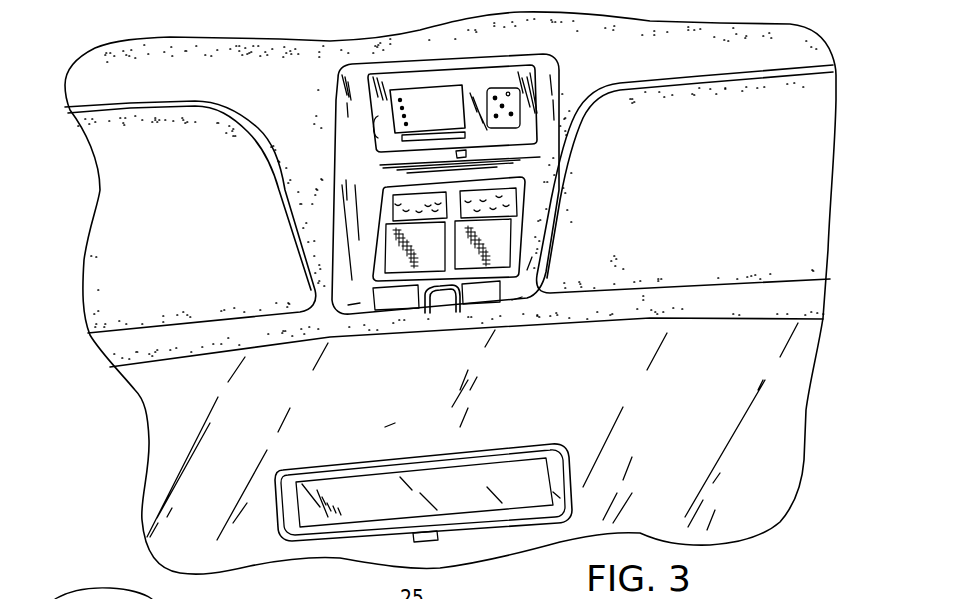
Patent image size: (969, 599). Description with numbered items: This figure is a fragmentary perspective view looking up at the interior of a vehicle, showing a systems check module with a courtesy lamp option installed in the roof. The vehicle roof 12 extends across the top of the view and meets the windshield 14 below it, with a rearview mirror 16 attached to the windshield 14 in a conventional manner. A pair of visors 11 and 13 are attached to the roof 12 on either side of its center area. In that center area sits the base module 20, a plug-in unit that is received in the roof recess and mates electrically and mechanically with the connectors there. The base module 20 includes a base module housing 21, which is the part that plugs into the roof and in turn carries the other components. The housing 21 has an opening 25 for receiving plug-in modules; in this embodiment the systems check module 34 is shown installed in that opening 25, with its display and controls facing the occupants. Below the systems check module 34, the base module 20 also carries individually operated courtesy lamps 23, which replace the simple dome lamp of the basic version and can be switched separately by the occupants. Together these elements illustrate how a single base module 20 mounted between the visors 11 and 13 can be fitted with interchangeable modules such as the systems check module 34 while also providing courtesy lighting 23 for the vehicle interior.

The visor 11 is at (164, 219).
The roof 12 is at (265, 53).
The visor 13 is at (710, 207).
The windshield 14 is at (178, 408).
The rearview mirror 16 is at (561, 501).
The base module 20 is at (586, 91).
The base module housing 21 is at (550, 195).
The courtesy lamps 23 is at (396, 262).
The opening 25 is at (378, 125).
The systems check module 34 is at (473, 82).